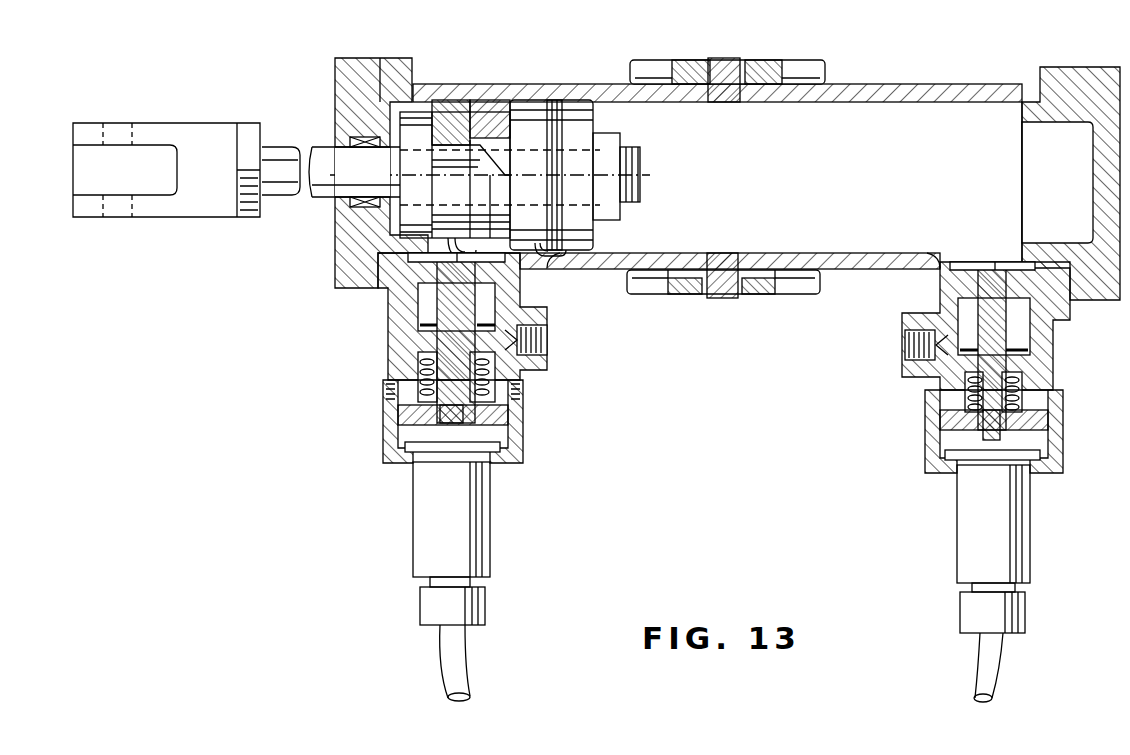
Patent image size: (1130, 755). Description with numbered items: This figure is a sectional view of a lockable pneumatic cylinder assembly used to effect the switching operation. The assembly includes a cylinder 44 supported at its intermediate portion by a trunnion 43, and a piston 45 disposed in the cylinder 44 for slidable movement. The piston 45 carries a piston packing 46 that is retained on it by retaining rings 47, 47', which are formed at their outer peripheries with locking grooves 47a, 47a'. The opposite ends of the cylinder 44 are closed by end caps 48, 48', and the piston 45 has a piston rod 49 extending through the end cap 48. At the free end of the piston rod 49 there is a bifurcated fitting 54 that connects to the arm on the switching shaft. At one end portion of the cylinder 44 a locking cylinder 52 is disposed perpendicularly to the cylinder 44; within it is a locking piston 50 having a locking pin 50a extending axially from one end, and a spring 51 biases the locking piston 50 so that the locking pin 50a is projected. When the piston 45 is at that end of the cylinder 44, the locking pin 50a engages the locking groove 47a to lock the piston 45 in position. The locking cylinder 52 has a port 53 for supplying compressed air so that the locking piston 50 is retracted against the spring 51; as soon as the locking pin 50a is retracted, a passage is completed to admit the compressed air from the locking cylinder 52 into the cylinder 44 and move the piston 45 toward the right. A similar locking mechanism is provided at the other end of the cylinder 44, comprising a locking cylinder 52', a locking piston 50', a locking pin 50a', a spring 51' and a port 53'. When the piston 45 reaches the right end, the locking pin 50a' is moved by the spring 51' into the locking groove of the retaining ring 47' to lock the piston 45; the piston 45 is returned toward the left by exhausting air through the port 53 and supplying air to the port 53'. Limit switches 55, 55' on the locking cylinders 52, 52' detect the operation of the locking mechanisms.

The trunnion 43 is at (694, 62).
The cylinder 44 is at (607, 84).
The piston 45 is at (492, 100).
The piston packing 46 is at (473, 98).
The retaining ring 47 is at (445, 99).
The retaining ring 47' is at (565, 151).
The locking groove 47a is at (401, 280).
The locking groove 47a' is at (594, 241).
The end cap 48 is at (373, 157).
The end cap 48' is at (1071, 162).
The piston rod 49 is at (278, 197).
The locking piston 50 is at (469, 330).
The locking piston 50' is at (973, 335).
The locking pin 50a is at (493, 278).
The locking pin 50a' is at (987, 250).
The spring 51 is at (435, 411).
The spring 51' is at (1013, 421).
The locking cylinder 52 is at (428, 341).
The locking cylinder 52' is at (1027, 352).
The port 53 is at (550, 340).
The port 53' is at (897, 343).
The bifurcated fitting 54 is at (190, 208).
The limit switch 55 is at (472, 581).
The limit switch 55' is at (967, 583).